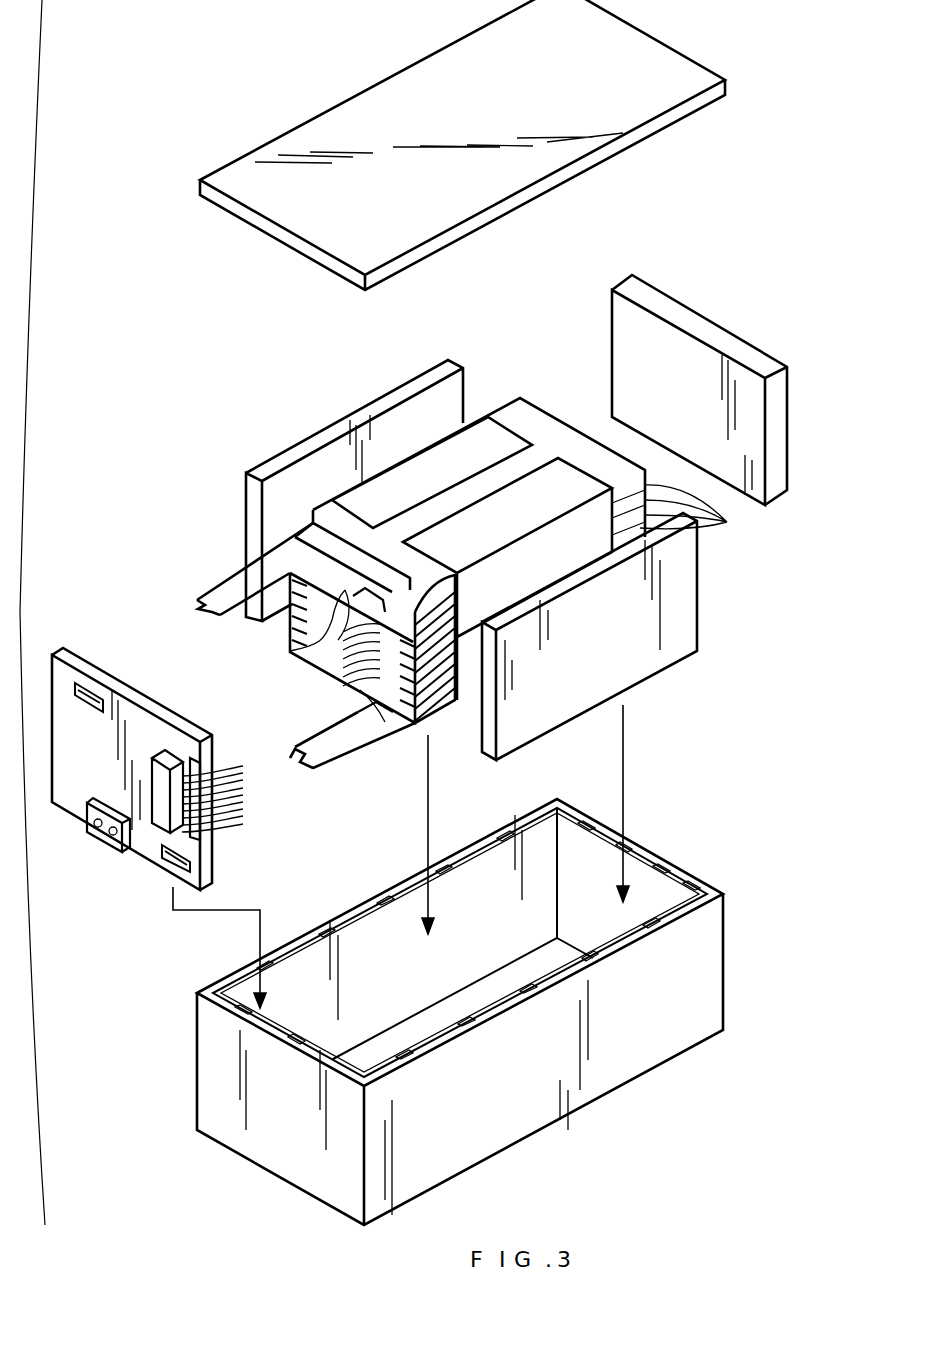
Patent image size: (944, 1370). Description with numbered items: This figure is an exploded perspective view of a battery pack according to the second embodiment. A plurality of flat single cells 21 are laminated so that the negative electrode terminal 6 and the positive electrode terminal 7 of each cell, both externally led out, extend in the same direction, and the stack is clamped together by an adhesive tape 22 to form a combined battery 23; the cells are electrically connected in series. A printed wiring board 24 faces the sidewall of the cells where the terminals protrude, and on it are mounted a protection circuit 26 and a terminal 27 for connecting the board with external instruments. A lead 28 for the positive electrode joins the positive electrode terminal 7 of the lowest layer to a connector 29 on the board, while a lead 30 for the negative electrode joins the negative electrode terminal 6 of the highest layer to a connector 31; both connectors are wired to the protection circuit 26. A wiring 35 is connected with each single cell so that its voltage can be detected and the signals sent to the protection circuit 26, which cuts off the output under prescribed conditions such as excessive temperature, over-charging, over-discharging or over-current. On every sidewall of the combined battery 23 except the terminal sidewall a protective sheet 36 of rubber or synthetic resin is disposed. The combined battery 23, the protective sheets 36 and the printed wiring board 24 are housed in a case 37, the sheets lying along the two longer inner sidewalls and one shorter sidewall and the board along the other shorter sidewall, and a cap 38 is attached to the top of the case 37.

The cap 38 is at (660, 66).
The protective sheet 36 is at (318, 445).
The combined battery 23 is at (406, 471).
The adhesive tape 22 is at (548, 490).
The single cells 21 is at (699, 511).
The lead for the negative electrode 30 is at (203, 590).
The negative electrode terminal 6 is at (297, 541).
The positive electrode terminal 7 is at (373, 600).
The lead for the positive electrode 28 is at (333, 757).
The wiring 35 is at (327, 648).
The printed wiring board 24 is at (90, 652).
The connector for the negative terminal 31 is at (96, 693).
The connector for the positive terminal 29 is at (205, 860).
The terminal 27 is at (108, 841).
The protection circuit 26 is at (168, 750).
The case 37 is at (708, 975).